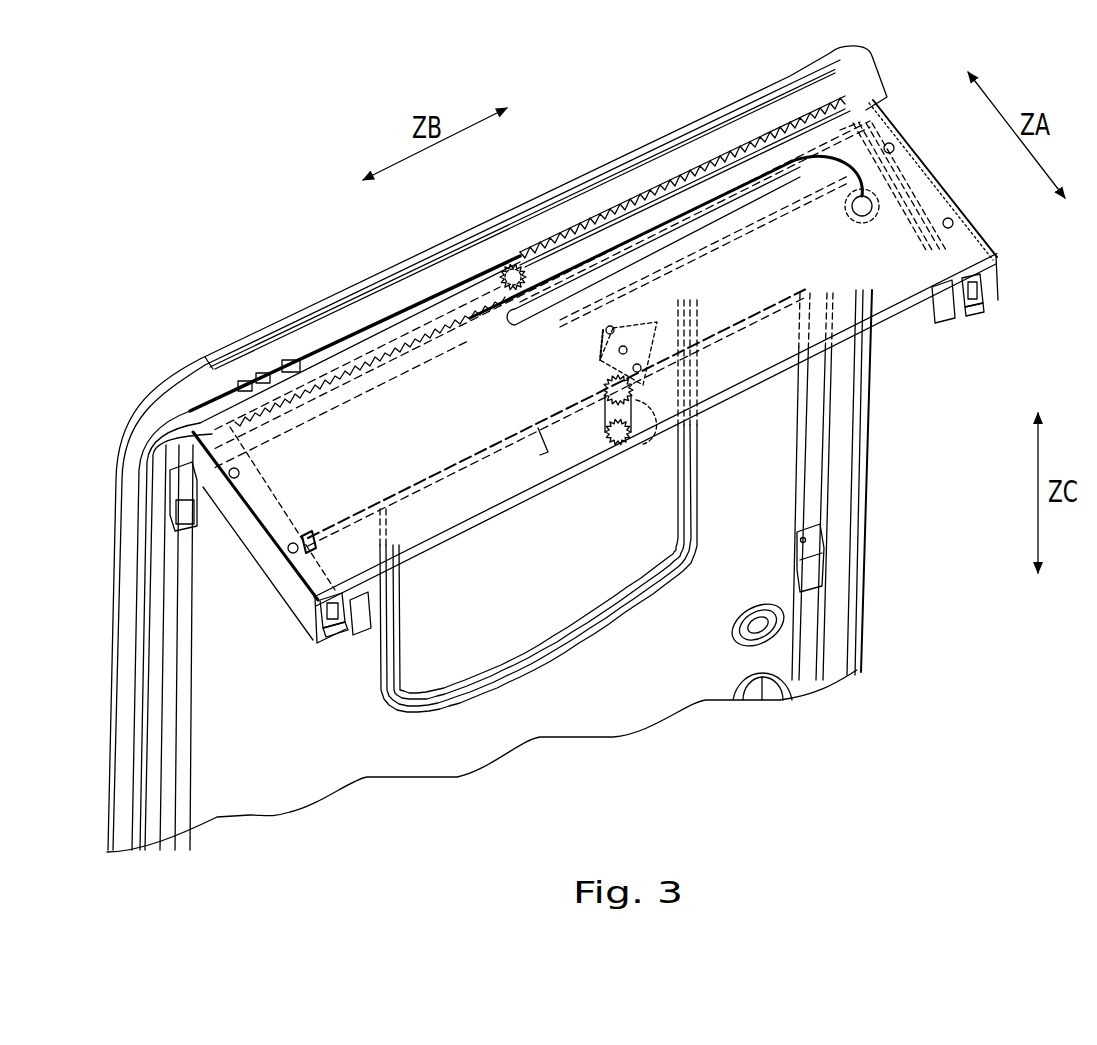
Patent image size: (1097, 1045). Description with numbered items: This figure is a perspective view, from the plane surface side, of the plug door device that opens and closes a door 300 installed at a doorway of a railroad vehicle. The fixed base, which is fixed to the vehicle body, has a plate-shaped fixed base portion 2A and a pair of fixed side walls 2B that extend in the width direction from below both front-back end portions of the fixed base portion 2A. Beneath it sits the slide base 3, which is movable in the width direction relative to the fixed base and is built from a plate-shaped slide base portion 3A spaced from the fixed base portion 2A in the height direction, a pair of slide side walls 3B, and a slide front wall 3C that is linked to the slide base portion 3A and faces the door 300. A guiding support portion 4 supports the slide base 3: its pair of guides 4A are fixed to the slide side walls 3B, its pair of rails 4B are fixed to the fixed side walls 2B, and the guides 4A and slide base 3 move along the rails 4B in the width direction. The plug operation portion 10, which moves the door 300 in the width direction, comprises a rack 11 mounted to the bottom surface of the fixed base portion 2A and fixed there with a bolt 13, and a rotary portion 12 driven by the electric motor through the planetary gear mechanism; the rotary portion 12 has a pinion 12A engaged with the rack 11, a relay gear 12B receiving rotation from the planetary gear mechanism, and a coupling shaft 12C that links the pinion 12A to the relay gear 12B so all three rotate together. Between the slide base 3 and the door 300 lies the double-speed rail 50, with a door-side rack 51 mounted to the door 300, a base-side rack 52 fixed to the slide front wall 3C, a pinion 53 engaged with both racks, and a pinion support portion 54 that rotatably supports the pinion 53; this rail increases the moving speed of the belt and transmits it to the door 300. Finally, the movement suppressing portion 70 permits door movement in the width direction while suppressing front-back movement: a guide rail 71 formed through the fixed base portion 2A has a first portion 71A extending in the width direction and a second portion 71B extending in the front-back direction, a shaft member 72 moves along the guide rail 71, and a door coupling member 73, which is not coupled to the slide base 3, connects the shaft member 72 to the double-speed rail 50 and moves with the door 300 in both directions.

The door 300 is at (277, 325).
The base-side rack 52 is at (372, 333).
The slide front wall 3C is at (463, 284).
The pinion 53 is at (511, 263).
The double-speed rail 50 is at (574, 212).
The pinion support portion 54 is at (640, 197).
The door-side rack 51 is at (713, 166).
The door coupling member 73 is at (853, 121).
The first portion 71A is at (858, 168).
The shaft member 72 is at (855, 220).
The guide rail 71 is at (750, 230).
The second portion 71B is at (508, 334).
The movement suppressing portion 70 is at (814, 222).
The bolt 13 is at (623, 328).
The plug operation portion 10 is at (614, 398).
The rack 11 is at (607, 364).
The rotary portion 12 is at (585, 448).
The pinion 12A is at (690, 428).
The relay gear 12B is at (617, 446).
The coupling shaft 12C is at (640, 440).
The slide base 3 is at (479, 470).
The slide base portion 3A is at (428, 490).
The slide side walls 3B is at (362, 606).
The fixed side walls 2B is at (268, 570).
The fixed base portion 2A is at (887, 317).
The guiding support portion 4 is at (612, 498).
The guides 4A is at (333, 640).
The rails 4B is at (322, 616).